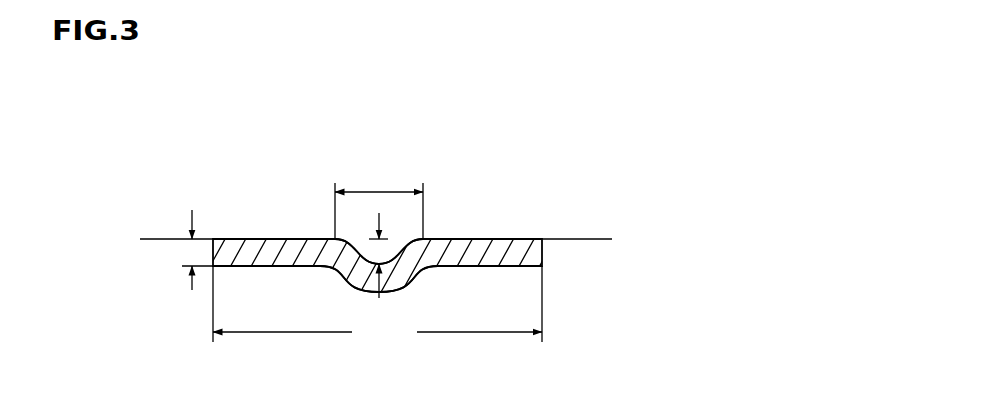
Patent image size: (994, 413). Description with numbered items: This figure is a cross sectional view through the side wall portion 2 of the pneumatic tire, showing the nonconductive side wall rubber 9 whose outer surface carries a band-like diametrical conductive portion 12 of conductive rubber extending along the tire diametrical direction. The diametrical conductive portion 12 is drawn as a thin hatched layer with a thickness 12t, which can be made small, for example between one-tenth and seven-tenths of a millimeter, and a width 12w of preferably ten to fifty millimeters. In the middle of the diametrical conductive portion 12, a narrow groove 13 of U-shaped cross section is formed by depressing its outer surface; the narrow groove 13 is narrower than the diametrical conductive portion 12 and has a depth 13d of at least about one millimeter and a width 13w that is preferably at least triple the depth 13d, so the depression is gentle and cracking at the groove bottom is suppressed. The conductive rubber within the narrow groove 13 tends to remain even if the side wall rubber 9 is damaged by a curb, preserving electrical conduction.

The side wall portion 2 is at (615, 189).
The side wall rubber 9 is at (568, 251).
The diametrical conductive portion 12 is at (236, 246).
The thickness 12t is at (190, 253).
The width 12w is at (377, 307).
The narrow groove 13 is at (404, 251).
The width 13w is at (379, 196).
The depth 13d is at (374, 253).